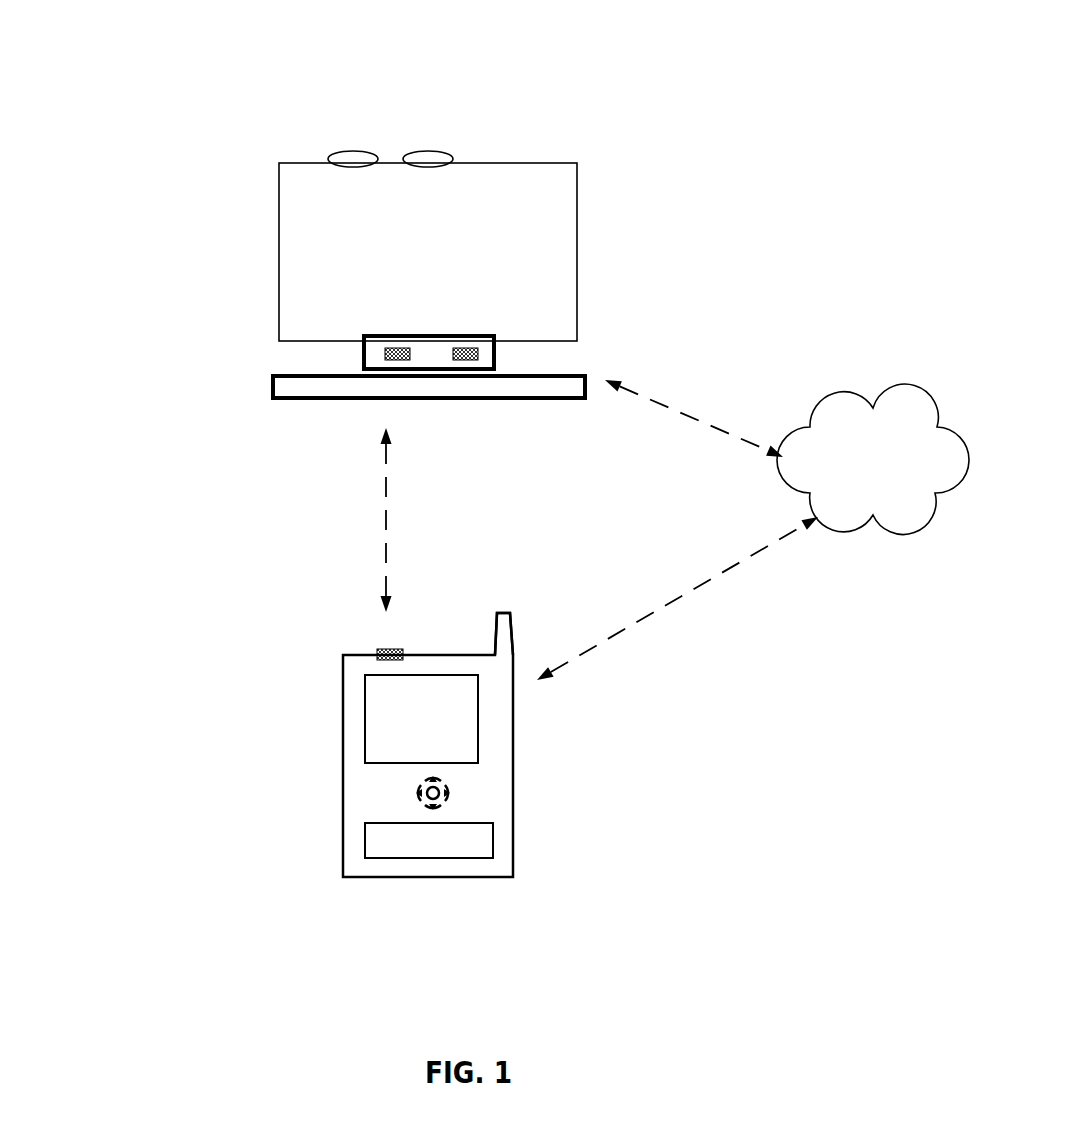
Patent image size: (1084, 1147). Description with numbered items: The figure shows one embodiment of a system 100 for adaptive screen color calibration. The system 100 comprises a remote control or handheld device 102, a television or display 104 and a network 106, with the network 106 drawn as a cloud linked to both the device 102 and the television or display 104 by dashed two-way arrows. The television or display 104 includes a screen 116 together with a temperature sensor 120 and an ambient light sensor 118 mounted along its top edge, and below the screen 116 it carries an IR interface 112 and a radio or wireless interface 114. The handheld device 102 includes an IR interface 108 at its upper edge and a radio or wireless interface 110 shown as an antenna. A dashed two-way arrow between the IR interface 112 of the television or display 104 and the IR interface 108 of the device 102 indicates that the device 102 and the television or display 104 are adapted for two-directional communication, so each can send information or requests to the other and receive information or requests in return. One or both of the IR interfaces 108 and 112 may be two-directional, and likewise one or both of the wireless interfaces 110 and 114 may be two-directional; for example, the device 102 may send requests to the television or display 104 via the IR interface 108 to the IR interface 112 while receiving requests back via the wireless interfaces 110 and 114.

The system 100 is at (722, 34).
The remote control or handheld device 102 is at (537, 795).
The television or display 104 is at (252, 226).
The network 106 is at (873, 459).
The IR interface 108 is at (388, 650).
The wireless interface 110 is at (553, 581).
The IR interface 112 is at (385, 350).
The wireless interface 114 is at (478, 360).
The screen 116 is at (579, 235).
The ambient light sensor 118 is at (433, 152).
The temperature sensor 120 is at (345, 152).